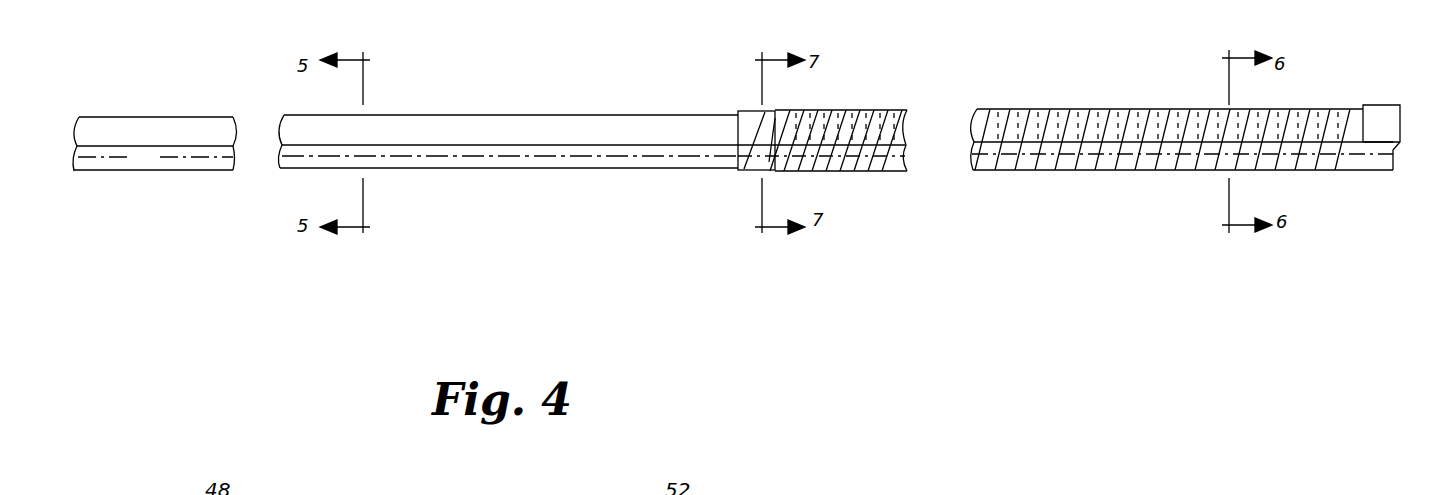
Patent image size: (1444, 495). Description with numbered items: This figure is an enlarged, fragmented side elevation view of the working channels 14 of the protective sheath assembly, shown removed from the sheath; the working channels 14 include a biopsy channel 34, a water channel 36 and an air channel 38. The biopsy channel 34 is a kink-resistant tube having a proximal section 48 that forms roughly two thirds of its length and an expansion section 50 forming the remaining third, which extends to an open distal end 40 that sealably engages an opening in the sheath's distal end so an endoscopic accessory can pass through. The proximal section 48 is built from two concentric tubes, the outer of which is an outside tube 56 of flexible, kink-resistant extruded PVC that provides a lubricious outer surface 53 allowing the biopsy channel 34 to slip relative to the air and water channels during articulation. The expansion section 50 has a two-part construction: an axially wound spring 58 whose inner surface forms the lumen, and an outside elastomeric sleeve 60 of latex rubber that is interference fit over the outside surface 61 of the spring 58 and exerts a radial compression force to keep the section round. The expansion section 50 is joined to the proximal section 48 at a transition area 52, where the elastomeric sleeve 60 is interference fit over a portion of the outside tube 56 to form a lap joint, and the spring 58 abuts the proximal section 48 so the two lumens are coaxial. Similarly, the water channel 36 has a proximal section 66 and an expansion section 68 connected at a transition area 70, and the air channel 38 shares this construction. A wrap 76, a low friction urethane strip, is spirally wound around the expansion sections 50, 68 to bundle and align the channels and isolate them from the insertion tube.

The working channels 14 is at (508, 131).
The biopsy channel 34 is at (675, 116).
The water channel 36 is at (670, 165).
The air channel 38 is at (600, 156).
The open distal end 40 is at (1402, 125).
The proximal section 48 is at (150, 108).
The expansion section 50 is at (1182, 130).
The transition area 52 is at (740, 128).
The outer surface 53 is at (220, 117).
The outside tube 56 is at (99, 117).
The axially wound spring 58 is at (1100, 109).
The elastomeric sleeve 60 is at (1070, 109).
The outside surface 61 is at (1143, 109).
The proximal section 66 is at (139, 172).
The expansion section 68 is at (1003, 172).
The transition area 70 is at (736, 172).
The wrap 76 is at (904, 110).